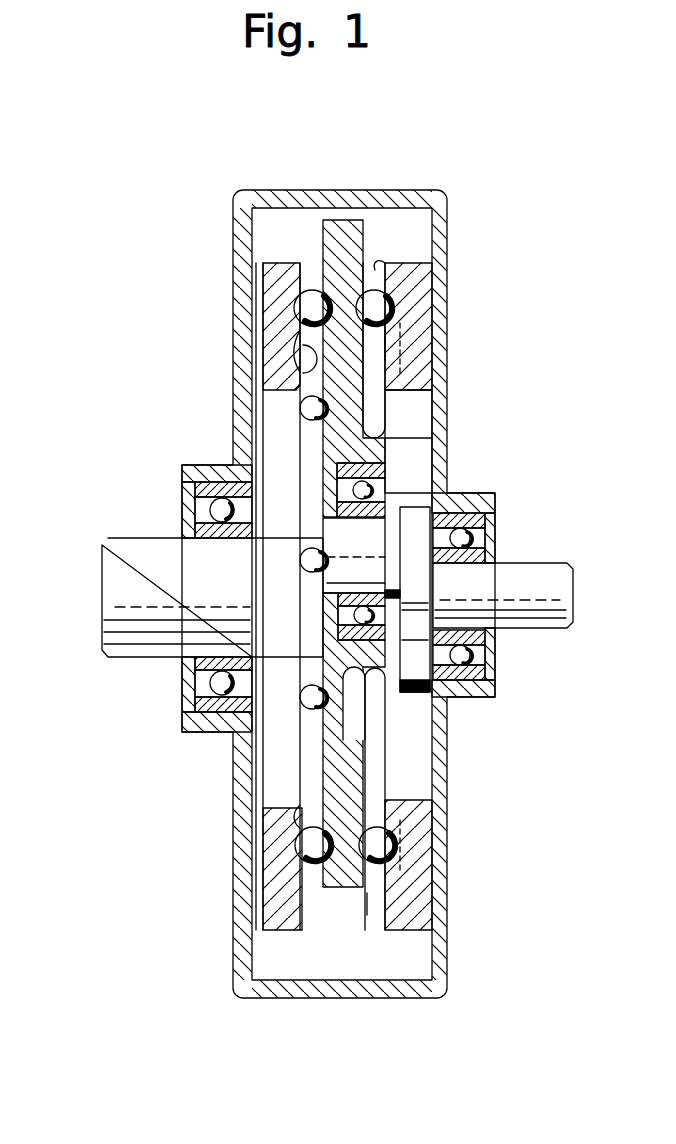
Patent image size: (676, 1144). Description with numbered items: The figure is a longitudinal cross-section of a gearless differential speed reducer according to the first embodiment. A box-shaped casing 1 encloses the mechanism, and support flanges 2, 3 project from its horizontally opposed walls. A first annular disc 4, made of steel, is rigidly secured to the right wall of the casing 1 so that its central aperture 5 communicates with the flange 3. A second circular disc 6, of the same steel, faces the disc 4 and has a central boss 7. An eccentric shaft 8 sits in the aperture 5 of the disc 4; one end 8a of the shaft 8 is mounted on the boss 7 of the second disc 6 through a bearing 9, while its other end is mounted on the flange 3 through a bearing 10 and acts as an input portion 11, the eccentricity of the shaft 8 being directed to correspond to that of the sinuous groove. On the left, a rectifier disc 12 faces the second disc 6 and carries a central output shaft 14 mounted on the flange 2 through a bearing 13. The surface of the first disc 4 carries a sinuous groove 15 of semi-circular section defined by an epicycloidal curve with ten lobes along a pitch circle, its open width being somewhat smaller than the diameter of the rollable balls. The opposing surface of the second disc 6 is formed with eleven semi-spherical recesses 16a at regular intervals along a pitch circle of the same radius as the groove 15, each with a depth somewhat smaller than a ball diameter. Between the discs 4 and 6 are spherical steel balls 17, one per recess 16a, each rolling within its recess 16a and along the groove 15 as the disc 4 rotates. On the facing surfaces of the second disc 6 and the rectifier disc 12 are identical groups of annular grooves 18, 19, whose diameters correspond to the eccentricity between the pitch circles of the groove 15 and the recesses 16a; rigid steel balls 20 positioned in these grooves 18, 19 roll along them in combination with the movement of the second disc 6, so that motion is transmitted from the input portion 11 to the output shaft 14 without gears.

The casing 1 is at (392, 185).
The support flange 2 is at (182, 468).
The support flange 3 is at (490, 505).
The first annular disc 4 is at (413, 275).
The central aperture 5 is at (413, 397).
The second circular disc 6 is at (338, 227).
The central boss 7 is at (390, 500).
The eccentric shaft 8 is at (426, 696).
The end of the eccentric shaft 8a is at (325, 548).
The bearing 9 is at (388, 497).
The bearing 10 is at (477, 697).
The input portion 11 is at (540, 585).
The rectifier disc 12 is at (277, 333).
The bearing 13 is at (210, 713).
The output shaft 14 is at (128, 582).
The sinuous groove 15 is at (385, 342).
The semi-spherical recesses 16a is at (380, 262).
The spherical balls 17 is at (393, 305).
The annular grooves 18 is at (318, 256).
The annular grooves 19 is at (297, 410).
The rigid steel balls 20 is at (298, 292).